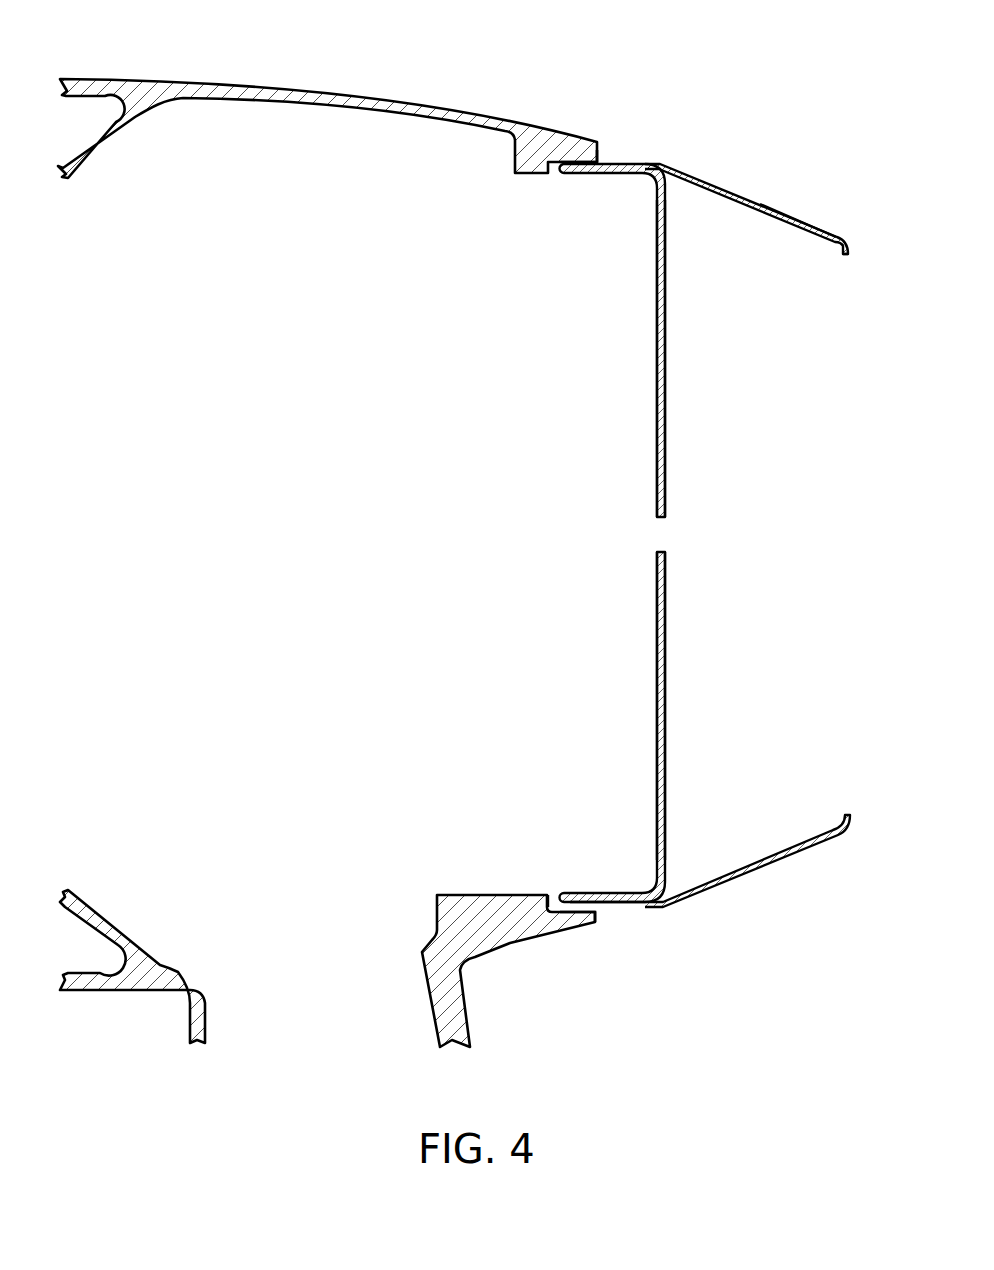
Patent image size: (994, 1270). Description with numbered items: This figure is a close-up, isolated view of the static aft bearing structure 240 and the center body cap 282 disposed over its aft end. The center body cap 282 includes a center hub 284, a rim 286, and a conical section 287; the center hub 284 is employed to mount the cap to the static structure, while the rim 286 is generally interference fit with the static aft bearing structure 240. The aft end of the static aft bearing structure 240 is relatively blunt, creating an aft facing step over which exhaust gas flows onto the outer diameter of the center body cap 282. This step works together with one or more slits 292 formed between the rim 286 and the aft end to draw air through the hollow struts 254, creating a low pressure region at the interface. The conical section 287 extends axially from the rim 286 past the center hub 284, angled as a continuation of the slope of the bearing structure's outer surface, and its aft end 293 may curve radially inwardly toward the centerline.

The static aft bearing structure 240 is at (317, 94).
The hollow struts 254 is at (444, 1021).
The center body cap 282 is at (729, 189).
The center hub 284 is at (667, 408).
The rim 286 is at (627, 897).
The conical section 287 is at (798, 212).
The slit 292 is at (577, 908).
The aft end of conical section 293 is at (846, 256).